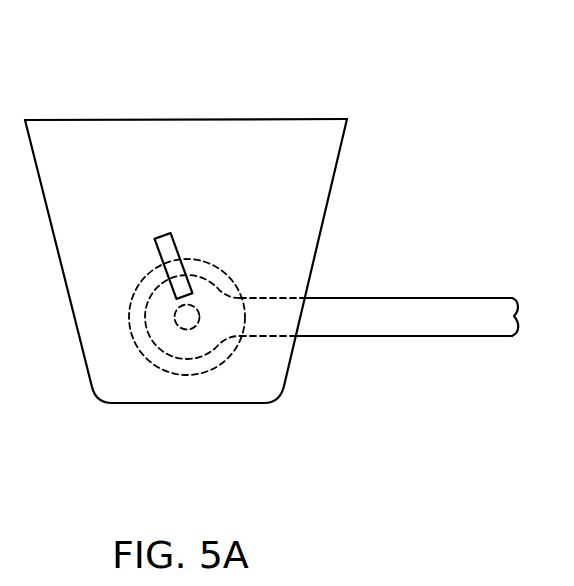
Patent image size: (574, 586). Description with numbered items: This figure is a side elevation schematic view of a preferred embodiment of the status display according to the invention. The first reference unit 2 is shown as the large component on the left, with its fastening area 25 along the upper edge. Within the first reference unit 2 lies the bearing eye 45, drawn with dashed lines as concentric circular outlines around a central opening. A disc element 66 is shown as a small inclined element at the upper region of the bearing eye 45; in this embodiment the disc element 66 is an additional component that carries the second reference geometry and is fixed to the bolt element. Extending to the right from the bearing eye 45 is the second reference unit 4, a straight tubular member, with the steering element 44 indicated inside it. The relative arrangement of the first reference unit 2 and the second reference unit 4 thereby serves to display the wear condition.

The first reference unit 2 is at (362, 167).
The fastening area 25 is at (252, 120).
The bearing eye 45 is at (198, 356).
The disc element 66 is at (190, 258).
The second reference unit 4 is at (399, 360).
The steering element 44 is at (447, 319).